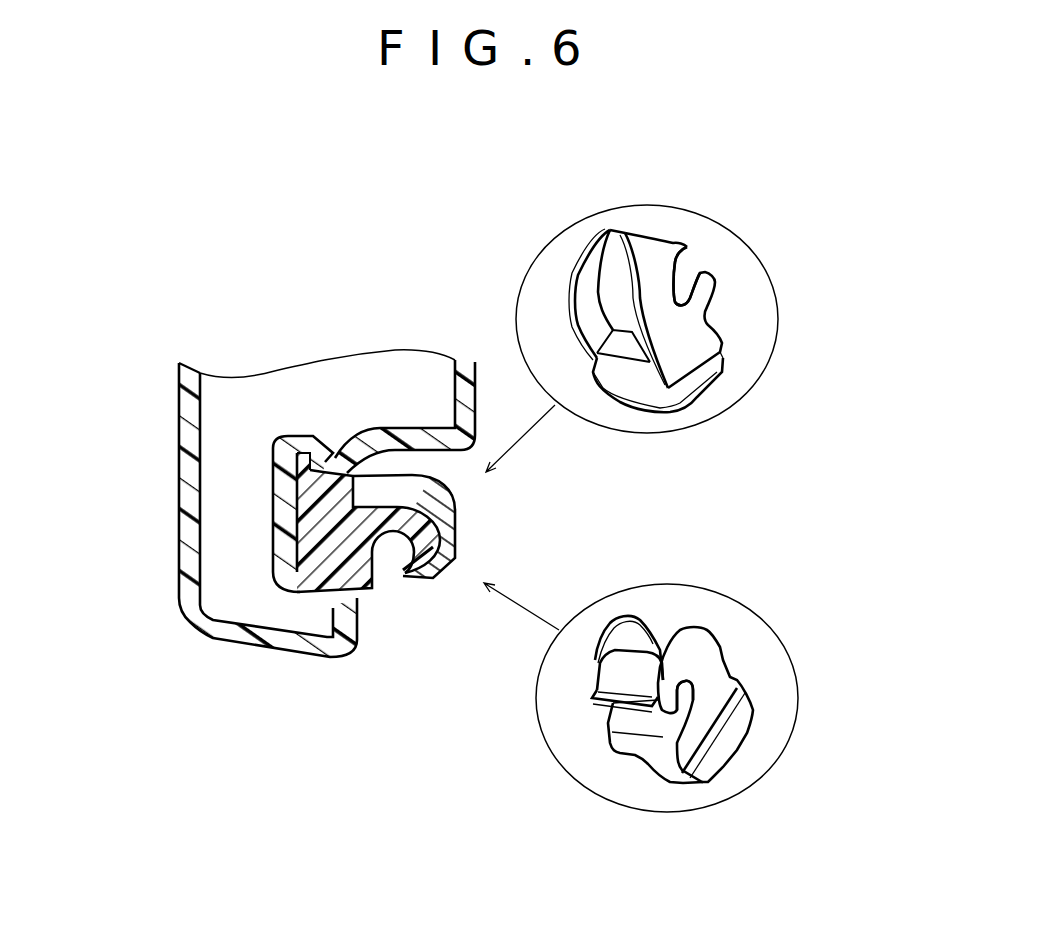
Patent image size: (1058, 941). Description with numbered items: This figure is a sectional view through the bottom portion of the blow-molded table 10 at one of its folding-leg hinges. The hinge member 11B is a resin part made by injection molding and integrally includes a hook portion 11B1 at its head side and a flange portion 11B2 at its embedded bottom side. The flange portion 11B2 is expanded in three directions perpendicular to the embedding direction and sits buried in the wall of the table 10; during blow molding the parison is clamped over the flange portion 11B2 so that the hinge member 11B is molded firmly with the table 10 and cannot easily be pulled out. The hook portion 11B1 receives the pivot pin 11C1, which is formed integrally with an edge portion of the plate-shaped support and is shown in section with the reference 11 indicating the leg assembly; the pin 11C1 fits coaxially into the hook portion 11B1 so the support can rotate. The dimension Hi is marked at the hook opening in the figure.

The table 10 is at (174, 440).
The clip 11 is at (416, 553).
The pivot pin 11C1 is at (393, 557).
The hinge member 11B is at (466, 521).
The hook portion 11B1 is at (424, 551).
The flange portion 11B2 is at (298, 458).
The notch height Hi is at (385, 595).